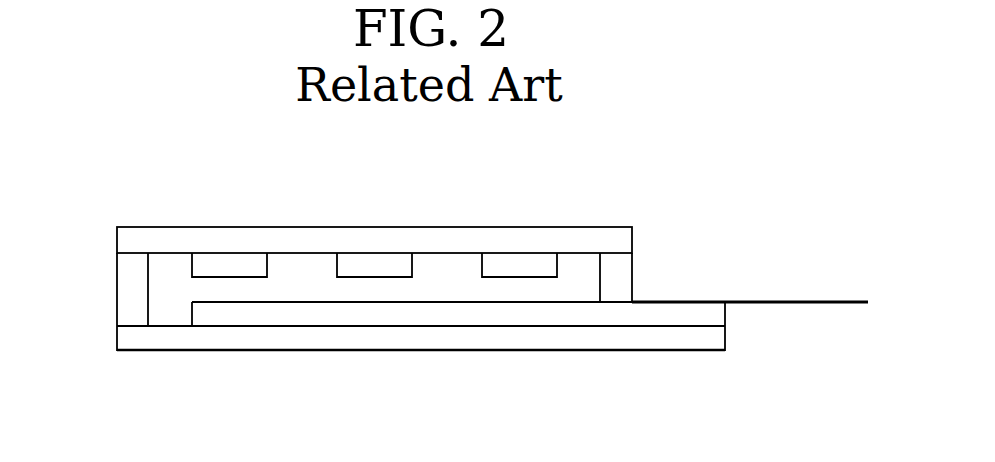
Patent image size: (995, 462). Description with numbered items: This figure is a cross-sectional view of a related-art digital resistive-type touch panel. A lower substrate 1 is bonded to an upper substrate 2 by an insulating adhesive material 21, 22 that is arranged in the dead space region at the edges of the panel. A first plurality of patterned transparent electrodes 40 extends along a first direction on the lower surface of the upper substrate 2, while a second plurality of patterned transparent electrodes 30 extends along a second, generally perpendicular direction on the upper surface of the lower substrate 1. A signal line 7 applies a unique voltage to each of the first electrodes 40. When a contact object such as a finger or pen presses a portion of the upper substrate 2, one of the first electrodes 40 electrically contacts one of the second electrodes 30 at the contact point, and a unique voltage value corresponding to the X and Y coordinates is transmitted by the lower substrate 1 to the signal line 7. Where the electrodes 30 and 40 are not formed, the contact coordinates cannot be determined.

The lower substrate 1 is at (117, 338).
The upper substrate 2 is at (117, 240).
The insulating adhesive material 21 is at (117, 290).
The insulating adhesive material 22 is at (628, 273).
The second plurality of patterned transparent electrodes 30 is at (235, 322).
The first plurality of patterned transparent electrodes 40 is at (236, 256).
The signal line 7 is at (803, 300).